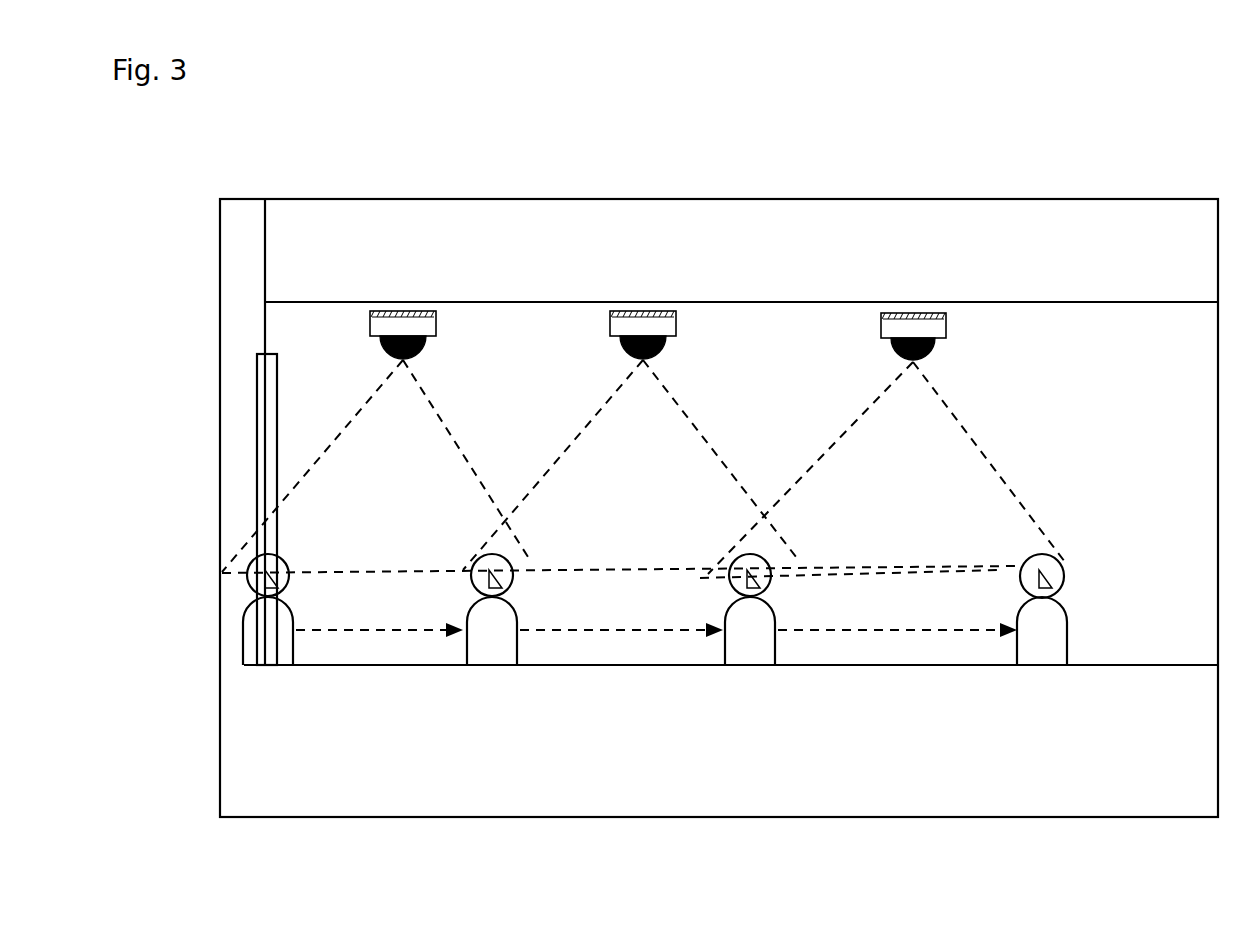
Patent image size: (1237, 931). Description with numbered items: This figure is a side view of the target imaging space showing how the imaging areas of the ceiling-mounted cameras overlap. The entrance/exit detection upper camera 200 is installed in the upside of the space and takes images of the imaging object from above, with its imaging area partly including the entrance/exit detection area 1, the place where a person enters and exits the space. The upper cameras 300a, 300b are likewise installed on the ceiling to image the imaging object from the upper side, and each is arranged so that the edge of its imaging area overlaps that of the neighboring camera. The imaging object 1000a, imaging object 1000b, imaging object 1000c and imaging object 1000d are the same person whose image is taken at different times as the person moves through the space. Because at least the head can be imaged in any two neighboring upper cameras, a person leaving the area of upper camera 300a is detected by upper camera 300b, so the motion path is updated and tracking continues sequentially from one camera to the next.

The entrance/exit detection area 1 is at (277, 420).
The entrance/exit detection upper camera 200 is at (400, 302).
The upper camera 300a is at (660, 311).
The upper camera 300b is at (927, 312).
The imaging object 1000a is at (283, 665).
The imaging object 1000b is at (495, 665).
The imaging object 1000c is at (752, 665).
The imaging object 1000d is at (1048, 665).